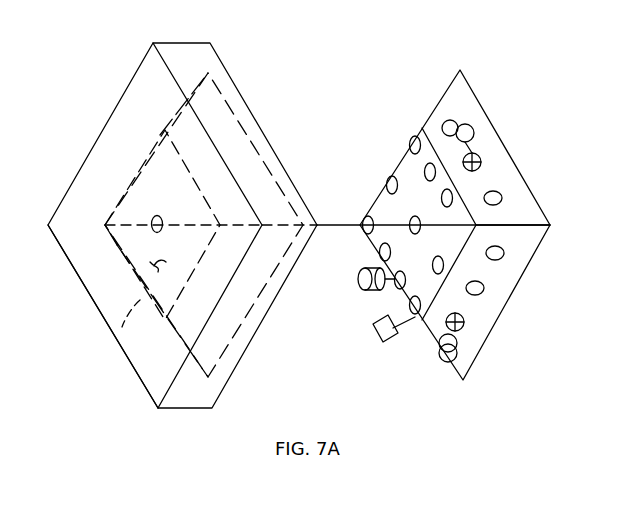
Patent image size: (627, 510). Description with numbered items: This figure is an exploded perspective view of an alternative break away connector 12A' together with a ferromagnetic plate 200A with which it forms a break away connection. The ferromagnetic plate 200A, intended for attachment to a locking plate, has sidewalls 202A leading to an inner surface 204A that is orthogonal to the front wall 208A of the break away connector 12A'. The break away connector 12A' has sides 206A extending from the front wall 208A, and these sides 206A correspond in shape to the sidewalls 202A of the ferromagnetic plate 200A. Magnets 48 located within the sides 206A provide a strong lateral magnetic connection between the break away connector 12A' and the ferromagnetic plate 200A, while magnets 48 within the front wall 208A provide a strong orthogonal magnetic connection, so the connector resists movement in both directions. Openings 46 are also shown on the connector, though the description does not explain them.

The ferromagnetic plate 200A is at (238, 76).
The sidewalls 202A is at (242, 293).
The inner surface 204A is at (117, 342).
The break away connector 12A' is at (433, 217).
The front wall 208A is at (398, 168).
The sides 206A is at (487, 300).
The holes 46 is at (481, 163).
The magnets 48 is at (465, 122).